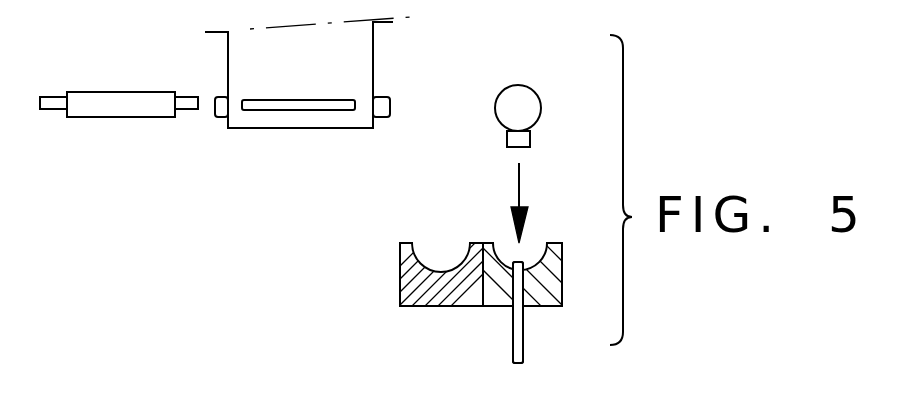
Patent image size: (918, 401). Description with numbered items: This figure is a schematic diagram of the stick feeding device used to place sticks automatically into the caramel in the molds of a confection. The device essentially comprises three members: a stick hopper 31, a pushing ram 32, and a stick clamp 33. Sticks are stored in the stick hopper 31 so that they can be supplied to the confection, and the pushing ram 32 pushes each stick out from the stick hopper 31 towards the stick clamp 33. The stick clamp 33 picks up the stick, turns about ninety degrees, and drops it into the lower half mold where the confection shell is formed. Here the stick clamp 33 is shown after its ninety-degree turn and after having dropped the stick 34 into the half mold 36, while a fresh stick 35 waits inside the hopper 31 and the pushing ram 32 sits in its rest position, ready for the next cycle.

The stick hopper 31 is at (362, 65).
The pushing ram 32 is at (122, 100).
The stick clamp 33 is at (530, 100).
The stick 34 is at (313, 105).
The fresh stick 35 is at (187, 109).
The half mold 36 is at (408, 273).